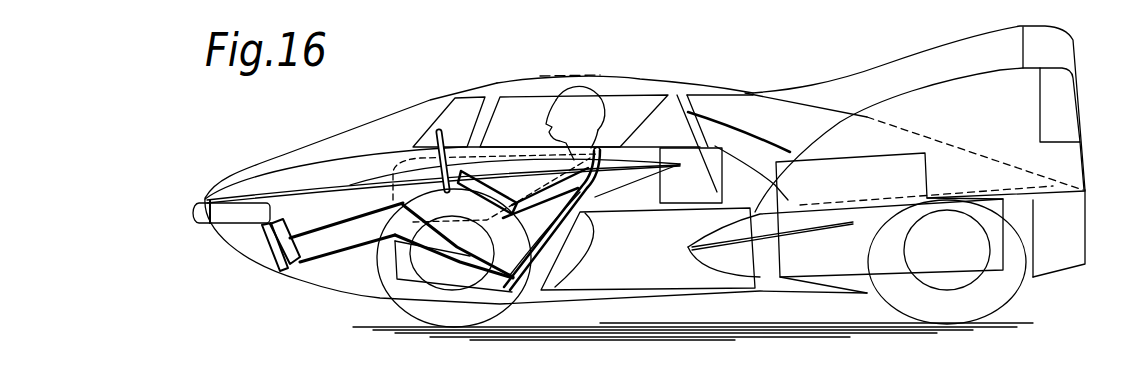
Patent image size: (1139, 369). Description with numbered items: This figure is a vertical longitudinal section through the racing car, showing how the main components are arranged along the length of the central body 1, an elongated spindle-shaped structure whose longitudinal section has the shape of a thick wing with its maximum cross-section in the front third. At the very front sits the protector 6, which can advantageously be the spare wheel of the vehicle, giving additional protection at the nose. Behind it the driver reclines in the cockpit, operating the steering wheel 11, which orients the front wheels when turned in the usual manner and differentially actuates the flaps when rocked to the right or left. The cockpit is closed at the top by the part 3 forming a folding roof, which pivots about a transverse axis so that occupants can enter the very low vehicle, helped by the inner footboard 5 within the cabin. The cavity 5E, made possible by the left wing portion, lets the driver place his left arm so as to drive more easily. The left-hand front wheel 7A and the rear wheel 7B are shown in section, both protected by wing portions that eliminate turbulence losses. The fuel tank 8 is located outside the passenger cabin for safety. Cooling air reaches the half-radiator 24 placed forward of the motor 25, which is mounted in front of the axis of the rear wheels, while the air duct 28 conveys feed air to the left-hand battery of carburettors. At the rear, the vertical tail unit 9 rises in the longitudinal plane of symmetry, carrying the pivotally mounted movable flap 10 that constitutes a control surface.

The central body 1 is at (308, 157).
The folding roof 3 is at (570, 80).
The inner footboard 5 is at (497, 280).
The cavity 5E is at (497, 167).
The protector 6 is at (203, 212).
The left-hand front wheel 7A is at (413, 303).
The rear wheel 7B is at (990, 292).
The fuel tank 8 is at (637, 280).
The vertical tail unit 9 is at (920, 58).
The movable flap 10 is at (1067, 60).
The steering wheel 11 is at (433, 133).
The half-radiator 24 is at (688, 158).
The motor 25 is at (900, 173).
The air duct 28 is at (722, 130).